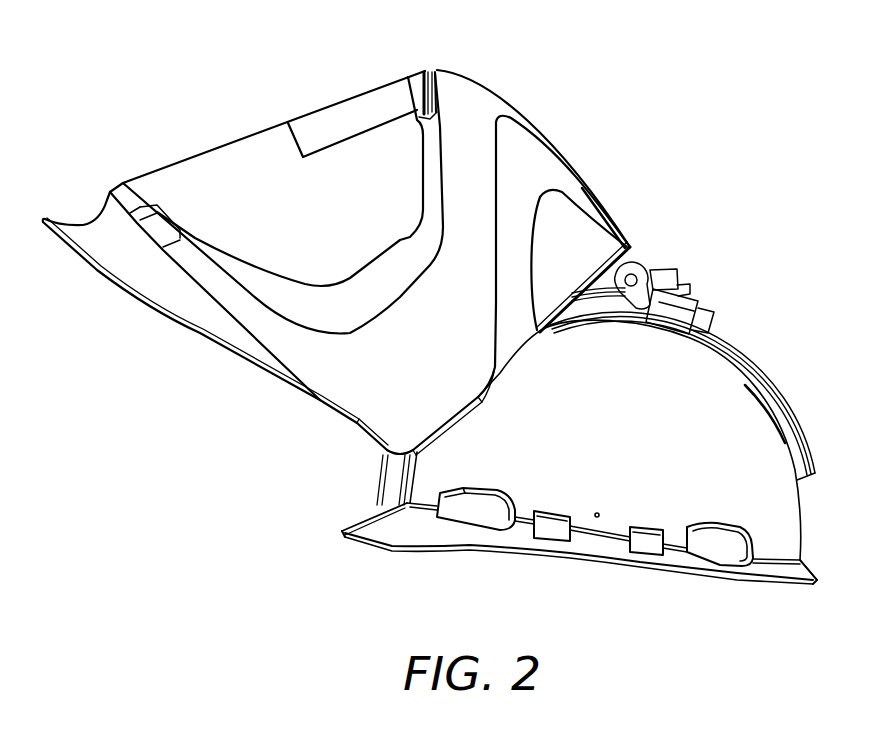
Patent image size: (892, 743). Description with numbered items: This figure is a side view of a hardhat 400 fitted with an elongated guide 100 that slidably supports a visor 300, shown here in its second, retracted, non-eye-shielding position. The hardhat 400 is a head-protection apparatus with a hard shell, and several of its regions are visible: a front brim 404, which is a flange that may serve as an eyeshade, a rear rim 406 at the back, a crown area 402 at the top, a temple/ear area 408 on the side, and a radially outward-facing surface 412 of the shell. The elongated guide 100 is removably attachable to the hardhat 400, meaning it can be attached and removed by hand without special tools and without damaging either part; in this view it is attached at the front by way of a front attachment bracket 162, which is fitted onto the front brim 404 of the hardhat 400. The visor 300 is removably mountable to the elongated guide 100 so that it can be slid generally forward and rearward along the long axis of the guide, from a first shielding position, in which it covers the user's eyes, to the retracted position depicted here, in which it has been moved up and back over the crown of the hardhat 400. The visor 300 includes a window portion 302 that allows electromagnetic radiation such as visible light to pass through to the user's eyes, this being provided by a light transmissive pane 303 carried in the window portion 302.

The elongated guide 100 is at (566, 454).
The front attachment bracket 162 is at (344, 531).
The visor 300 is at (336, 237).
The window portion 302 is at (300, 115).
The light transmissive pane 303 is at (367, 90).
The hardhat 400 is at (596, 567).
The crown area 402 is at (592, 331).
The front brim 404 is at (372, 548).
The rear rim 406 is at (810, 572).
The temple/ear area 408 is at (575, 493).
The radially outward-facing surface 412 is at (673, 353).